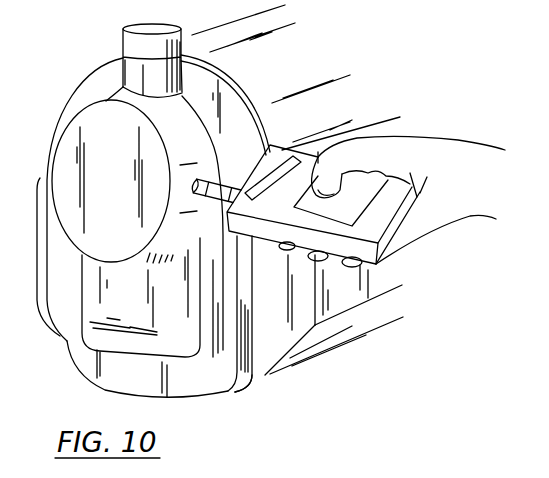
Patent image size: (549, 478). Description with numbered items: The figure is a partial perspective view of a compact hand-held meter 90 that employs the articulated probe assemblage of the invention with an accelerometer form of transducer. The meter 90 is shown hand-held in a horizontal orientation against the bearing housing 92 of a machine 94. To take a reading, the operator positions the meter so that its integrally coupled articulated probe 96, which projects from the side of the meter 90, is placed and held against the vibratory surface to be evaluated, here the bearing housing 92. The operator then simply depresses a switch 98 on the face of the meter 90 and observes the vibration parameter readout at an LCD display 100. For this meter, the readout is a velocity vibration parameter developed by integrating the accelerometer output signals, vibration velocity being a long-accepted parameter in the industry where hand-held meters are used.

The hand-held meter 90 is at (350, 187).
The bearing housing 92 is at (100, 117).
The machine 94 is at (261, 368).
The articulated probe 96 is at (223, 187).
The switch 98 is at (388, 229).
The LCD display 100 is at (280, 168).